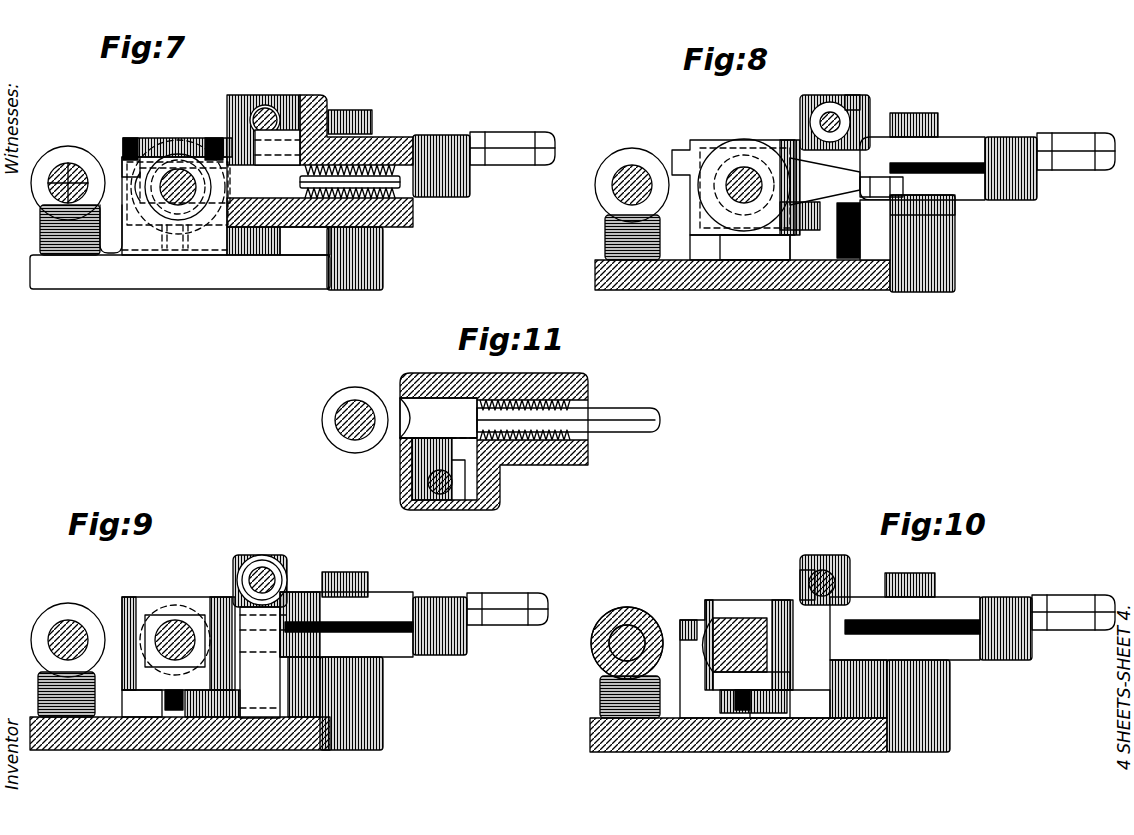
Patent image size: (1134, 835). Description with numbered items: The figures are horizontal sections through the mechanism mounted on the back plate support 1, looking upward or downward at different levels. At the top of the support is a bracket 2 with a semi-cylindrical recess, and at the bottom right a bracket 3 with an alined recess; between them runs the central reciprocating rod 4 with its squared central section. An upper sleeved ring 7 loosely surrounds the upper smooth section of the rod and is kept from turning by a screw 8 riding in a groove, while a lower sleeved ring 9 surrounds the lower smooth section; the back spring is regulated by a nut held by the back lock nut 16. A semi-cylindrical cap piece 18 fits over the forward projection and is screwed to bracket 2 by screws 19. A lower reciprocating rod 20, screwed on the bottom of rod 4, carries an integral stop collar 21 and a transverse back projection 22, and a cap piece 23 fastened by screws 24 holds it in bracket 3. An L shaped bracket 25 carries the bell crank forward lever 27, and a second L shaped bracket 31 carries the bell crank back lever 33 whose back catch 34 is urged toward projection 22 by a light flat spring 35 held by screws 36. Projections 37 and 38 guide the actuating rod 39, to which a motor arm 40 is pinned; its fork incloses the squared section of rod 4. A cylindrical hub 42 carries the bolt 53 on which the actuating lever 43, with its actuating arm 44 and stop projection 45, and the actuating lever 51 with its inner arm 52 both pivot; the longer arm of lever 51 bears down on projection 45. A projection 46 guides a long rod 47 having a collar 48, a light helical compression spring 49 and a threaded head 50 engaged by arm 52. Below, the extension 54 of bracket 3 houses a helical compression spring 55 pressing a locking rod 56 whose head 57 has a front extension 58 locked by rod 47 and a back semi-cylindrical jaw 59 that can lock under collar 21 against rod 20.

In FIG. 7, the back plate support 1 is at (95, 283).
In FIG. 8, the back plate support 1 is at (600, 275).
In FIG. 9, the back plate support 1 is at (93, 750).
In FIG. 10, the back plate support 1 is at (660, 752).
In FIG. 8, the bracket 2 is at (702, 248).
In FIG. 9, the bracket 2 is at (145, 705).
In FIG. 7, the bracket 3 is at (133, 250).
In FIG. 10, the bracket 3 is at (700, 710).
In FIG. 8, the central reciprocating rod 4 is at (702, 152).
In FIG. 9, the central reciprocating rod 4 is at (170, 628).
In FIG. 10, the central reciprocating rod 4 is at (735, 620).
In FIG. 10, the upper sleeved ring 7 is at (703, 640).
In FIG. 9, the screw 8 is at (172, 702).
In FIG. 10, the screw 8 is at (742, 710).
In FIG. 8, the lower sleeved ring 9 is at (744, 140).
In FIG. 8, the back lock nut 16 is at (730, 172).
In FIG. 10, the semi-cylindrical cap piece 18 is at (688, 620).
In FIG. 10, the screws 19 is at (710, 620).
In FIG. 7, the lower reciprocating rod 20 is at (170, 172).
In FIG. 8, the lower reciprocating rod 20 is at (752, 170).
In FIG. 11, the lower reciprocating rod 20 is at (340, 425).
In FIG. 7, the stop collar 21 is at (195, 160).
In FIG. 11, the stop collar 21 is at (340, 400).
In FIG. 8, the transverse back projection 22 is at (800, 238).
In FIG. 7, the semi-cylindrical cap piece 23 is at (128, 160).
In FIG. 7, the screws 24 is at (216, 138).
In FIG. 9, the L shaped bracket 25 is at (300, 700).
In FIG. 10, the L shaped bracket 25 is at (845, 700).
In FIG. 9, the bell crank forward lever 27 is at (210, 700).
In FIG. 10, the bell crank forward lever 27 is at (770, 700).
In FIG. 7, the L shaped bracket 31 is at (305, 240).
In FIG. 8, the L shaped bracket 31 is at (880, 262).
In FIG. 7, the bell crank back lever 33 is at (258, 240).
In FIG. 8, the bell crank back lever 33 is at (770, 235).
In FIG. 8, the back catch 34 is at (856, 265).
In FIG. 8, the light flat spring 35 is at (870, 182).
In FIG. 8, the screws 36 is at (955, 215).
In FIG. 9, the projection 37 is at (65, 700).
In FIG. 10, the projection 37 is at (625, 705).
In FIG. 7, the projection 38 is at (60, 220).
In FIG. 8, the projection 38 is at (615, 232).
In FIG. 7, the actuating rod 39 is at (62, 168).
In FIG. 8, the actuating rod 39 is at (628, 168).
In FIG. 9, the actuating rod 39 is at (52, 625).
In FIG. 10, the actuating rod 39 is at (612, 612).
In FIG. 7, the motor arm 40 is at (175, 154).
In FIG. 8, the motor arm 40 is at (690, 150).
In FIG. 9, the motor arm 40 is at (138, 625).
In FIG. 10, the motor arm 40 is at (622, 630).
In FIG. 7, the cylindrical hub 42 is at (385, 265).
In FIG. 8, the cylindrical hub 42 is at (955, 275).
In FIG. 9, the cylindrical hub 42 is at (375, 750).
In FIG. 10, the cylindrical hub 42 is at (905, 752).
In FIG. 8, the actuating lever 43 is at (960, 180).
In FIG. 9, the actuating lever 43 is at (385, 640).
In FIG. 10, the actuating lever 43 is at (1010, 685).
In FIG. 8, the actuating arm 44 is at (790, 140).
In FIG. 9, the actuating arm 44 is at (218, 597).
In FIG. 10, the actuating arm 44 is at (783, 605).
In FIG. 7, the stop projection 45 is at (447, 140).
In FIG. 8, the stop projection 45 is at (1005, 140).
In FIG. 9, the stop projection 45 is at (432, 600).
In FIG. 10, the stop projection 45 is at (1005, 600).
In FIG. 9, the projection 46 is at (265, 662).
In FIG. 7, the rod 47 is at (263, 113).
In FIG. 8, the rod 47 is at (830, 110).
In FIG. 11, the rod 47 is at (428, 482).
In FIG. 9, the rod 47 is at (268, 570).
In FIG. 10, the rod 47 is at (822, 570).
In FIG. 8, the collar 48 is at (852, 95).
In FIG. 9, the light helical compression spring 49 is at (258, 565).
In FIG. 10, the head 50 is at (803, 583).
In FIG. 7, the actuating lever 51 is at (538, 132).
In FIG. 8, the actuating lever 51 is at (1090, 133).
In FIG. 9, the actuating lever 51 is at (525, 593).
In FIG. 10, the actuating lever 51 is at (1092, 595).
In FIG. 8, the inner arm 52 is at (870, 100).
In FIG. 9, the inner arm 52 is at (288, 566).
In FIG. 10, the inner arm 52 is at (805, 556).
In FIG. 7, the bolt 53 is at (356, 110).
In FIG. 8, the bolt 53 is at (930, 113).
In FIG. 9, the bolt 53 is at (360, 572).
In FIG. 10, the bolt 53 is at (940, 575).
In FIG. 7, the extension 54 is at (318, 95).
In FIG. 11, the extension 54 is at (590, 386).
In FIG. 7, the helical compression spring 55 is at (385, 165).
In FIG. 11, the helical compression spring 55 is at (530, 442).
In FIG. 7, the locking rod 56 is at (413, 202).
In FIG. 11, the locking rod 56 is at (636, 434).
In FIG. 11, the head 57 is at (435, 410).
In FIG. 7, the extension 58 is at (285, 120).
In FIG. 11, the extension 58 is at (466, 484).
In FIG. 7, the semi-cylindrical jaw 59 is at (235, 218).
In FIG. 11, the semi-cylindrical jaw 59 is at (405, 400).